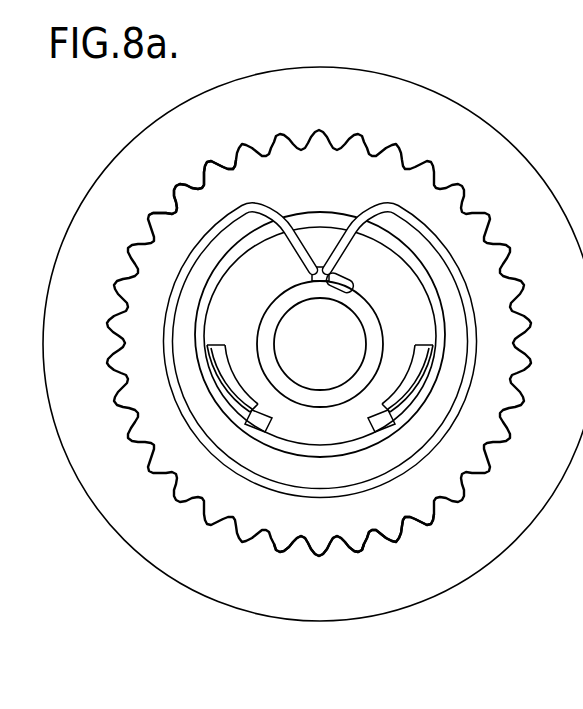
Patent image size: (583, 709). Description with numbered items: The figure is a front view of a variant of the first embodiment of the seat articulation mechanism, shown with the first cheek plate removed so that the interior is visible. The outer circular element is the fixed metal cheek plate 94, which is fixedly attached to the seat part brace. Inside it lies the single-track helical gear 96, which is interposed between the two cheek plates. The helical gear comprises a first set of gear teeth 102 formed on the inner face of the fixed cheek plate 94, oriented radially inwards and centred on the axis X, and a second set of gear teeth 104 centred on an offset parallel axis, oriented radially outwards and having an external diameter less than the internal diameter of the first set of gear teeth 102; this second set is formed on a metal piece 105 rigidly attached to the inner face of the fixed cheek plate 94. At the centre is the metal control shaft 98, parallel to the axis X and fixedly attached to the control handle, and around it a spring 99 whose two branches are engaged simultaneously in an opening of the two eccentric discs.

The fixed metal cheek plate 94 is at (496, 556).
The single-track helical gear 96 is at (455, 173).
The metal control shaft 98 is at (298, 363).
The spring 99 is at (398, 207).
The first set of gear teeth 102 is at (320, 558).
The second set of gear teeth 104 is at (398, 549).
The metal piece 105 is at (208, 208).